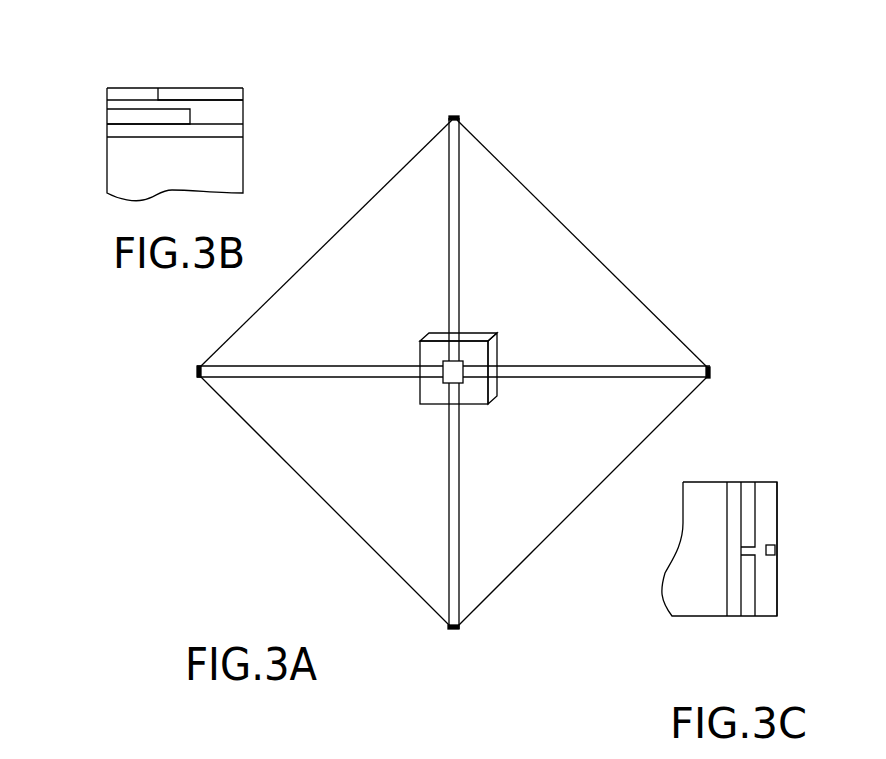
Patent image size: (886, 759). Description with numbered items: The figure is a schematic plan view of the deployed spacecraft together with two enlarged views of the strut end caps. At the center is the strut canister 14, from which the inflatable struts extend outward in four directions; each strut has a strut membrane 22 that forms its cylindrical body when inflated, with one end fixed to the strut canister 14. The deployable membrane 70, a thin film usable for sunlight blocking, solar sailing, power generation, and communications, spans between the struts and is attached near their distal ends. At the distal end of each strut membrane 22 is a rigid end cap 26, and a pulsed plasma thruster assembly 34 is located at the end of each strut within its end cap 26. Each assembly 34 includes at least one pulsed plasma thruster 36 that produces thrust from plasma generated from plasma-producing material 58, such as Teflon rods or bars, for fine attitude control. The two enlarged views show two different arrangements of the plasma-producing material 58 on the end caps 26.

In FIG. 3A, the strut canister 14 is at (474, 336).
In FIG. 3B, the strut membrane 22 is at (107, 160).
In FIG. 3C, the strut membrane 22 is at (686, 617).
In FIG. 3B, the rigid end cap 26 is at (130, 88).
In FIG. 3C, the rigid end cap 26 is at (778, 508).
In FIG. 3A, the pulsed plasma thruster assembly 34 is at (461, 112).
In FIG. 3B, the pulsed plasma thruster 36 is at (244, 92).
In FIG. 3C, the pulsed plasma thruster 36 is at (733, 617).
In FIG. 3B, the plasma-producing material 58 is at (213, 95).
In FIG. 3C, the plasma-producing material 58 is at (750, 496).
In FIG. 3A, the deployable membrane 70 is at (527, 210).